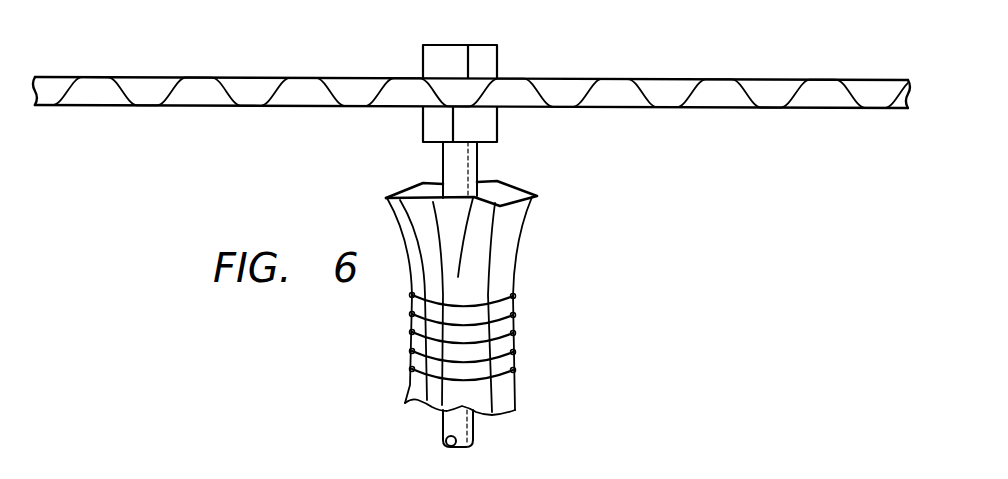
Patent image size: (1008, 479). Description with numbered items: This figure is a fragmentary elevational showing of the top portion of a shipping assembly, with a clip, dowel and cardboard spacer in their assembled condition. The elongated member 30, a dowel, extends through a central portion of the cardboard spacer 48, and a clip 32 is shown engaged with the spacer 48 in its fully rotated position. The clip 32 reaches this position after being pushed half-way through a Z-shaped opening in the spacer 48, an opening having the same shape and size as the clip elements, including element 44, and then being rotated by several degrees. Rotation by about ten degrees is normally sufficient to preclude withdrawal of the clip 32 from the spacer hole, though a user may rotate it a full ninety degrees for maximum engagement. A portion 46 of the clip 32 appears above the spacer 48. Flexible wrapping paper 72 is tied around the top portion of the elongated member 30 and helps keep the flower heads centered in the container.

The elongated member 30 is at (470, 160).
The clip 32 is at (520, 128).
The element of clip 44 is at (430, 127).
The upper nut 46 is at (488, 58).
The cardboard spacer 48 is at (203, 106).
The flexible wrapping paper 72 is at (515, 243).